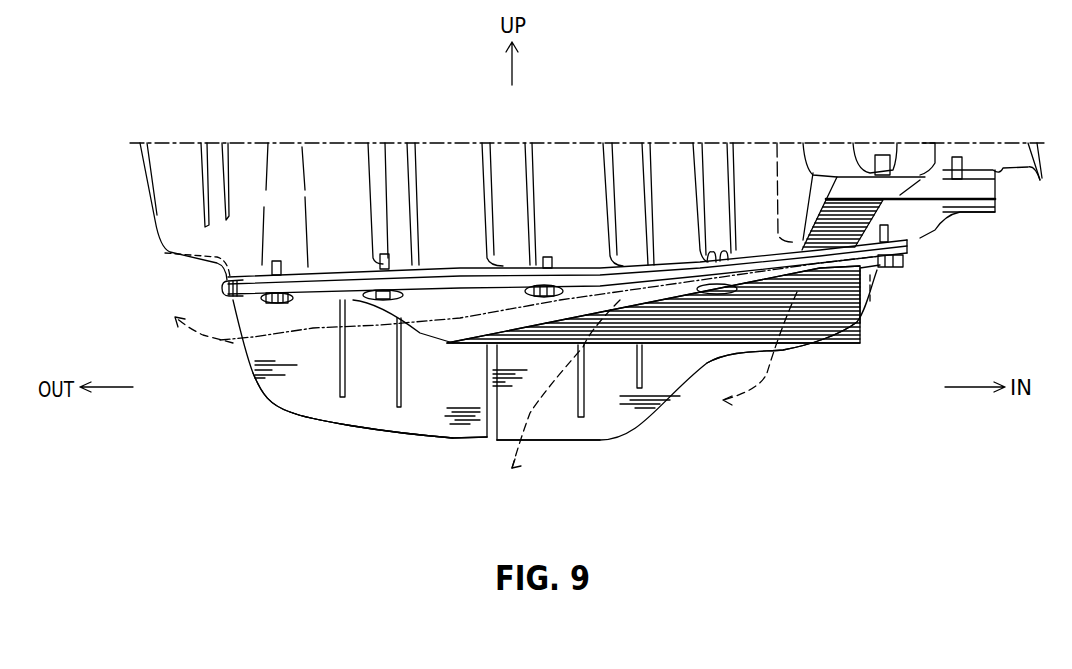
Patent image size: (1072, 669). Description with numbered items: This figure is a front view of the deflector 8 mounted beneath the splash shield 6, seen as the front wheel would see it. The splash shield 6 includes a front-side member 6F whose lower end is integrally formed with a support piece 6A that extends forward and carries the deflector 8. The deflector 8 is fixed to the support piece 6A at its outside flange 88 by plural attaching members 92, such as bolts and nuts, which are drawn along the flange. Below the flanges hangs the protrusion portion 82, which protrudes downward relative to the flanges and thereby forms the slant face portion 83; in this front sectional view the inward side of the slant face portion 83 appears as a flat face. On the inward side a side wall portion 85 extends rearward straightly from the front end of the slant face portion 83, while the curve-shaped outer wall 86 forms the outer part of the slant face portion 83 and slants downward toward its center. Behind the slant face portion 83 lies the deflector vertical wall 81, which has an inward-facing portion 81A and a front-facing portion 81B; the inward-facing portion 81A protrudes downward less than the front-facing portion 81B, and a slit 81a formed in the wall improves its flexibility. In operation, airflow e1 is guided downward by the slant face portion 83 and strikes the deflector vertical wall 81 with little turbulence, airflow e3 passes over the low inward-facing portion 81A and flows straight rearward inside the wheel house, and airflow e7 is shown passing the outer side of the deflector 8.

The splash shield 6 is at (348, 119).
The front-side member 6F is at (436, 152).
The support piece 6A is at (567, 266).
The deflector 8 is at (249, 398).
The deflector vertical wall 81 is at (451, 449).
The inward-facing portion 81A is at (797, 347).
The front-facing portion 81B is at (355, 410).
The slit 81a is at (490, 441).
The protrusion portion 82 is at (688, 330).
The slant face portion 83 is at (653, 304).
The side wall portion 85 is at (880, 283).
The curve-shaped outer wall 86 is at (435, 330).
The outside flange 88 is at (447, 276).
The attaching members 92 is at (283, 265).
The airflow e1 is at (550, 387).
The airflow e3 is at (767, 376).
The air flow e7 is at (233, 343).